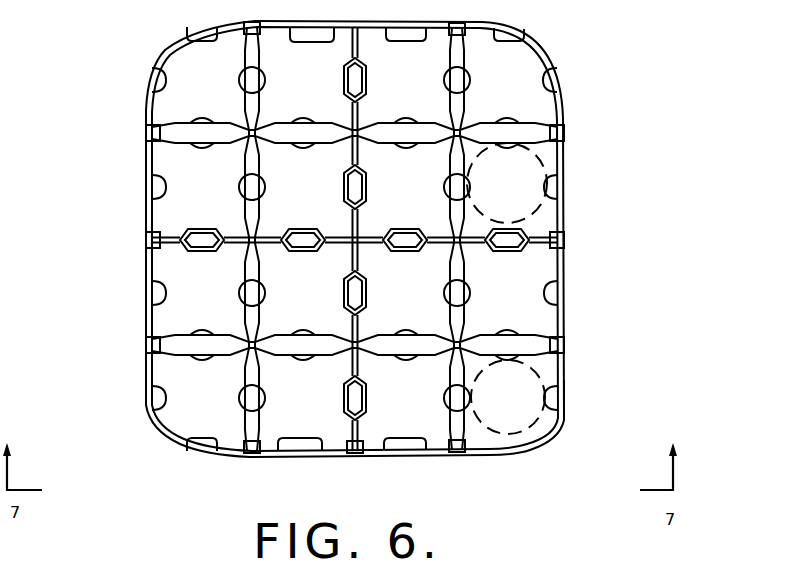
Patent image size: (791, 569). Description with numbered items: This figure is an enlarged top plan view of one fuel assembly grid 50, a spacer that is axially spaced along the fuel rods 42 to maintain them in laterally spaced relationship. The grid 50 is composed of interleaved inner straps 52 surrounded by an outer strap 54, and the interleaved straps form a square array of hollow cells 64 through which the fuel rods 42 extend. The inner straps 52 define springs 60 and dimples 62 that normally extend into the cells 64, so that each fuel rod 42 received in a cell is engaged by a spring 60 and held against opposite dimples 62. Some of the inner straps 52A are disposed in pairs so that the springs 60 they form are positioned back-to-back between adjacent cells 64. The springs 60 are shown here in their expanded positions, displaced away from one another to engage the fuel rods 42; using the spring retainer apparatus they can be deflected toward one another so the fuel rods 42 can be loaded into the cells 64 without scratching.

The grid 50 is at (568, 61).
The inner straps 52 is at (232, 288).
The paired inner straps 52A is at (197, 373).
The outer strap 54 is at (553, 373).
The springs 60 is at (300, 357).
The dimples 62 is at (300, 229).
The cells 64 is at (195, 297).
The fuel rods 42 is at (540, 213).